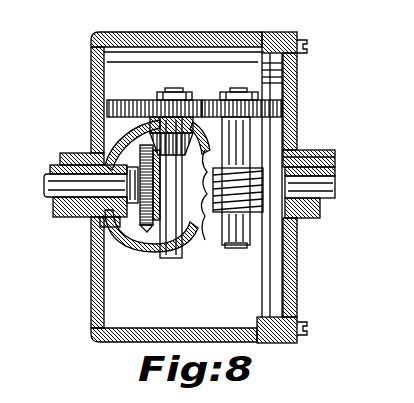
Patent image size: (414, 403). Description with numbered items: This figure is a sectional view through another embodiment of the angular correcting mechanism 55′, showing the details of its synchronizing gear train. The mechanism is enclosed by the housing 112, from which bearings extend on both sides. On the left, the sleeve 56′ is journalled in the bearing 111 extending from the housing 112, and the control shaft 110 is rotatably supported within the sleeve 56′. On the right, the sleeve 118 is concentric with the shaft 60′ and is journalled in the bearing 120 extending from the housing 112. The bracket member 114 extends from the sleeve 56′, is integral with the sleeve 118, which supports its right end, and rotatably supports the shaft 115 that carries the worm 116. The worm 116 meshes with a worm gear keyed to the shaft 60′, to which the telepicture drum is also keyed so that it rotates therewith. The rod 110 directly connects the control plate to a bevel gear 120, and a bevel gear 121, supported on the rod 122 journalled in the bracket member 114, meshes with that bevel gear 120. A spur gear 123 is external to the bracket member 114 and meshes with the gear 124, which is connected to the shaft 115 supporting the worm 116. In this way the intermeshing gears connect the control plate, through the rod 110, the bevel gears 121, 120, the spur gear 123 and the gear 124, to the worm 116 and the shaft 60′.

The angular correcting mechanism 55′ is at (191, 33).
The sleeve 56′ is at (47, 213).
The shaft 60′ is at (336, 186).
The control shaft 110 is at (47, 178).
The bearing 111 is at (73, 217).
The housing 112 is at (102, 305).
The bracket member 114 is at (118, 245).
The shaft 115 is at (239, 92).
The worm 116 is at (214, 195).
The sleeve 118 is at (334, 172).
The bevel gear 120 is at (318, 230).
The bevel gear 121 is at (193, 160).
The rod 122 is at (170, 255).
The spur gear 123 is at (125, 102).
The gear 124 is at (210, 100).